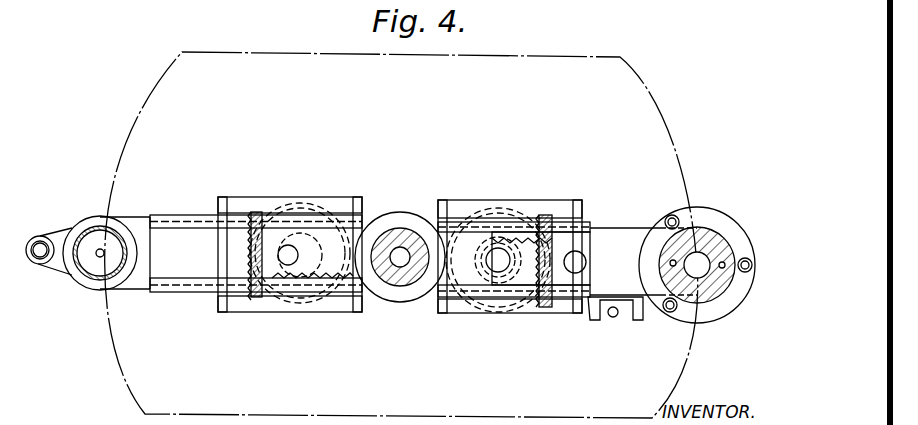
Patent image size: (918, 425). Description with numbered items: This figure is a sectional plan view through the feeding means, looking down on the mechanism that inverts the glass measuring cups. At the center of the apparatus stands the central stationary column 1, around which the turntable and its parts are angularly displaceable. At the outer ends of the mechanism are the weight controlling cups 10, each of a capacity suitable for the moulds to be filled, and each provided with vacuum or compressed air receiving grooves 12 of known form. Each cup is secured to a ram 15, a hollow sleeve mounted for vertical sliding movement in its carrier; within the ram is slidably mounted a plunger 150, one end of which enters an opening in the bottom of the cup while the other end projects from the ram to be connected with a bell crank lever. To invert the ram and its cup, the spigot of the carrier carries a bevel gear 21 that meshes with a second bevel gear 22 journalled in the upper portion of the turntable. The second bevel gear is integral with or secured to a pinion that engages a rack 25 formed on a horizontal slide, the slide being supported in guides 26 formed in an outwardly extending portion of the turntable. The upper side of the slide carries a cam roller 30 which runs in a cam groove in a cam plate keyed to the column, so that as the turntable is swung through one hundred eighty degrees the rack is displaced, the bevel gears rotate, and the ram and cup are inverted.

The central stationary column 1 is at (403, 277).
The weight controlling cup 10 is at (720, 237).
The vacuum or compressed air receiving grooves 12 is at (673, 265).
The ram 15 is at (80, 268).
The plunger 150 is at (100, 258).
The bevel gear 21 is at (253, 283).
The second bevel gear 22 is at (297, 308).
The rack 25 is at (357, 238).
The guides 26 is at (338, 208).
The cam roller 30 is at (577, 263).